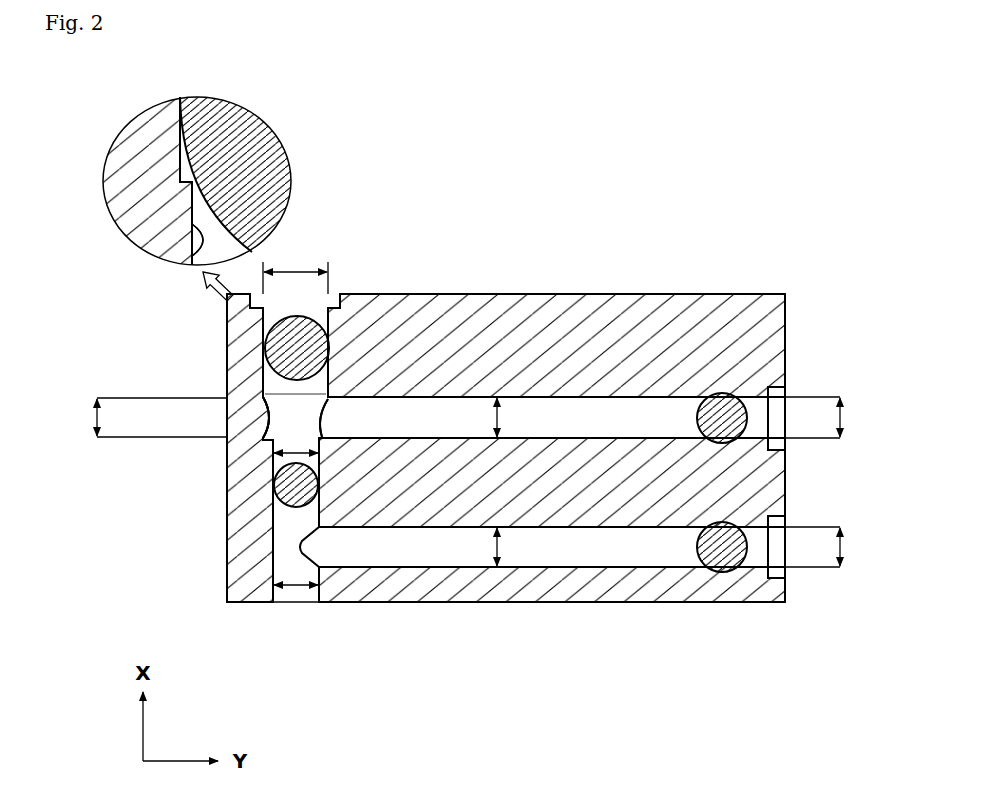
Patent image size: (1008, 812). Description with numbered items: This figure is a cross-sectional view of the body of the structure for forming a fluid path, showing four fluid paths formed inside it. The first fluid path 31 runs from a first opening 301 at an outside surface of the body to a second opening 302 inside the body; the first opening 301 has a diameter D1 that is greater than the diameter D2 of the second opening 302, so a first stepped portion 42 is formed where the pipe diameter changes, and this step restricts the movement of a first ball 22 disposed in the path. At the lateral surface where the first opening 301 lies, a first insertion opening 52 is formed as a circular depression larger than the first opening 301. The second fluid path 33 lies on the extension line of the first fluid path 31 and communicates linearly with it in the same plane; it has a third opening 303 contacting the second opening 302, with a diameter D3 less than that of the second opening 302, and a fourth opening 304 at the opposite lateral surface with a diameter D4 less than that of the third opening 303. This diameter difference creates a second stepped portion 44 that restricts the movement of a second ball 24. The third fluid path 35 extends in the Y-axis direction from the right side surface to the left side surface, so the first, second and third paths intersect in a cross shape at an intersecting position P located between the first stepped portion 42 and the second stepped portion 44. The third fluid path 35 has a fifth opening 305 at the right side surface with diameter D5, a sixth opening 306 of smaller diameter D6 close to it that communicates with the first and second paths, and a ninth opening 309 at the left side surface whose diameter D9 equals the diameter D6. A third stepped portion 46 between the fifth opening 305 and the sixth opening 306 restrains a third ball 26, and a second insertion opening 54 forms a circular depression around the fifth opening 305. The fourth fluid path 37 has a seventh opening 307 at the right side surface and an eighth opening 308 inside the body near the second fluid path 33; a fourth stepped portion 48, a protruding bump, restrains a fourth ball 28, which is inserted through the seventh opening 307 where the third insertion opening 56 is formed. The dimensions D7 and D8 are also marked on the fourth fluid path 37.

The first stepped portion 42 is at (268, 152).
The first ball 22 is at (228, 152).
The first fluid path 31 is at (180, 250).
The first insertion opening 52 is at (340, 296).
The first opening 301 is at (367, 312).
The sixth opening 306 is at (348, 417).
The third fluid path 35 is at (535, 403).
The third stepped portion 46 is at (716, 392).
The third ball 26 is at (728, 393).
The fifth opening 305 is at (783, 362).
The second insertion opening 54 is at (786, 390).
The third insertion opening 56 is at (788, 522).
The seventh opening 307 is at (762, 545).
The fourth fluid path 37 is at (543, 570).
The fourth stepped portion 48 is at (720, 571).
The fourth ball 28 is at (738, 570).
The fourth opening 304 is at (293, 603).
The eighth opening 308 is at (330, 603).
The second opening 302 is at (224, 398).
The ninth opening 309 is at (243, 424).
The third opening 303 is at (240, 447).
The second ball 24 is at (272, 468).
The second stepped portion 44 is at (278, 498).
The second fluid path 33 is at (286, 553).
The intersecting position P is at (220, 360).
The diameter of the first opening D1 is at (295, 271).
The diameter of the second opening D2 is at (296, 423).
The diameter of the third opening D3 is at (295, 419).
The diameter of the fourth opening D4 is at (296, 574).
The diameter of the fifth opening D5 is at (831, 417).
The diameter of the sixth opening D6 is at (475, 417).
The diameter D7 is at (831, 547).
The diameter D8 is at (475, 547).
The diameter of the ninth opening D9 is at (143, 417).